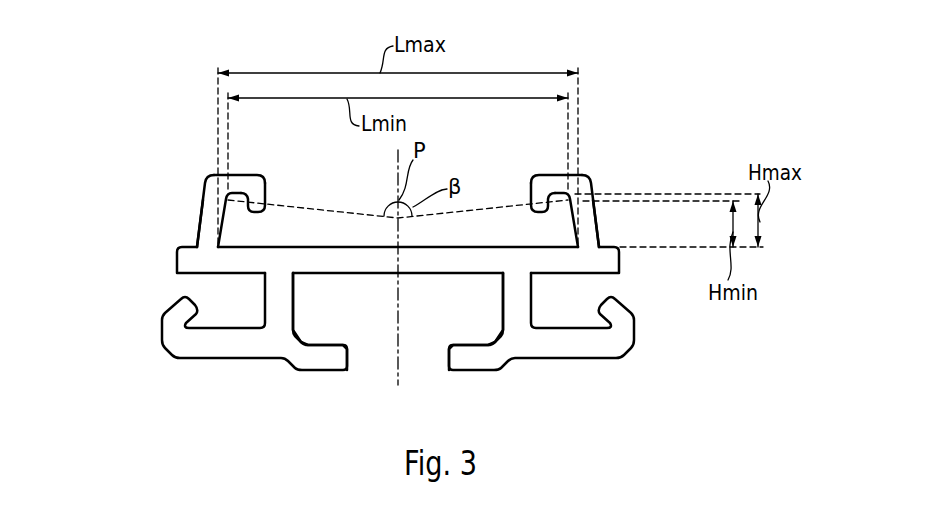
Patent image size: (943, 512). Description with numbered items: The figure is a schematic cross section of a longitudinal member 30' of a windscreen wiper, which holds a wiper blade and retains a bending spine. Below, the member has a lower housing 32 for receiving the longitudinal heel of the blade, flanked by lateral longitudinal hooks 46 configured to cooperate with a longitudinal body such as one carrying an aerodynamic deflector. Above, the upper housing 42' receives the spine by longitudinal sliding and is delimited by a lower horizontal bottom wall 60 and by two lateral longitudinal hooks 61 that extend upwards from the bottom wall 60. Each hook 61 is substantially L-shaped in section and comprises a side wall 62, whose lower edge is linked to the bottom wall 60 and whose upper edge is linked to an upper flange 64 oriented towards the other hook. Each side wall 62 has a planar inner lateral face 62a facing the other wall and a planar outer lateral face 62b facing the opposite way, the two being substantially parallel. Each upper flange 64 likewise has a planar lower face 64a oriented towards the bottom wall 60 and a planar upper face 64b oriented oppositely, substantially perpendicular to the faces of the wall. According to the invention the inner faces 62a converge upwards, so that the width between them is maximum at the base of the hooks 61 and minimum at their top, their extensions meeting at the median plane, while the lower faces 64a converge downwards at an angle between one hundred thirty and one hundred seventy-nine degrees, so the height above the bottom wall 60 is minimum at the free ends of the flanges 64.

The longitudinal member 30' is at (418, 262).
The lower housing 32 is at (398, 321).
The upper housing 42' is at (398, 221).
The lateral longitudinal hooks 46 is at (205, 355).
The bottom horizontal wall 60 is at (354, 250).
The lateral longitudinal hooks 61 is at (181, 233).
The side wall 62 is at (207, 213).
The inner lateral face 62a is at (225, 216).
The outer lateral face 62b is at (197, 223).
The upper flange 64 is at (245, 176).
The lower face 64a is at (252, 207).
The upper face 64b is at (212, 177).